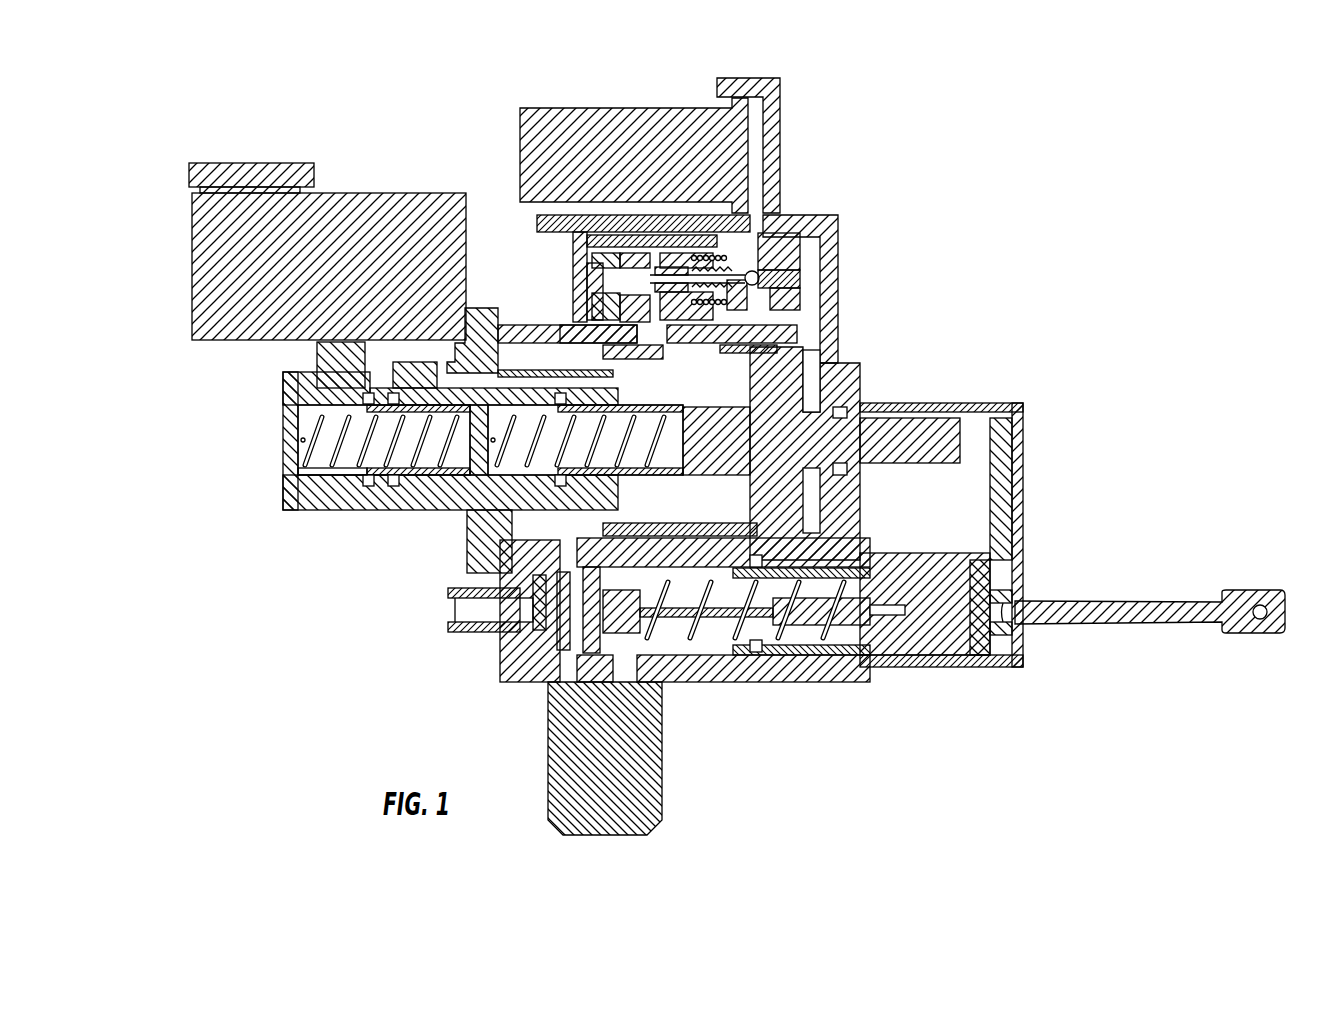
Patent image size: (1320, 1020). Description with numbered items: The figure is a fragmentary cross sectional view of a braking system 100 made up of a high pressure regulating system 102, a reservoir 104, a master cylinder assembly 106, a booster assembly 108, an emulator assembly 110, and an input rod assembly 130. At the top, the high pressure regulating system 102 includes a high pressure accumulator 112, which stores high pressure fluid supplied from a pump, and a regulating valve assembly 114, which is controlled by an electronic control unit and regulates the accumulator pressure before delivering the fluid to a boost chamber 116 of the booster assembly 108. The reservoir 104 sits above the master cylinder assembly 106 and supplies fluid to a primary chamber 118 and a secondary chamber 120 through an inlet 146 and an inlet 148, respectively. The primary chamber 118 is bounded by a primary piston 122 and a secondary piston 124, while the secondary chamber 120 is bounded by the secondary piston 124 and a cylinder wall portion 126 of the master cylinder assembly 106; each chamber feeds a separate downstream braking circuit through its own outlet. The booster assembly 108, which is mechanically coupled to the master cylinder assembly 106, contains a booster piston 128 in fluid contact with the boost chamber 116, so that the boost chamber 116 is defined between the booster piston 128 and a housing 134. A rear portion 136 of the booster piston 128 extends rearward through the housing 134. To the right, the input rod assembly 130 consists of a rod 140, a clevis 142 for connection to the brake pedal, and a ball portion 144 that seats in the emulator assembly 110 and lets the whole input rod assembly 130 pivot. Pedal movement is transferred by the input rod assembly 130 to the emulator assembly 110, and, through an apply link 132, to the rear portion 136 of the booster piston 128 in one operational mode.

The braking system 100 is at (198, 112).
The high pressure regulating system 102 is at (692, 195).
The reservoir 104 is at (355, 192).
The master cylinder assembly 106 is at (470, 435).
The booster assembly 108 is at (809, 345).
The emulator assembly 110 is at (795, 697).
The high pressure accumulator 112 is at (585, 108).
The regulating valve assembly 114 is at (558, 268).
The boost chamber 116 is at (810, 383).
The primary chamber 118 is at (548, 456).
The secondary chamber 120 is at (353, 462).
The primary piston 122 is at (708, 405).
The secondary piston 124 is at (428, 462).
The cylinder wall portion 126 is at (285, 430).
The booster piston 128 is at (800, 500).
The input rod assembly 130 is at (1153, 598).
The apply link 132 is at (977, 403).
The housing 134 is at (838, 252).
The rear portion 136 is at (922, 463).
The rod 140 is at (1067, 600).
The clevis 142 is at (1248, 593).
The ball portion 144 is at (1003, 618).
The inlet 146 is at (578, 403).
The inlet 148 is at (383, 368).